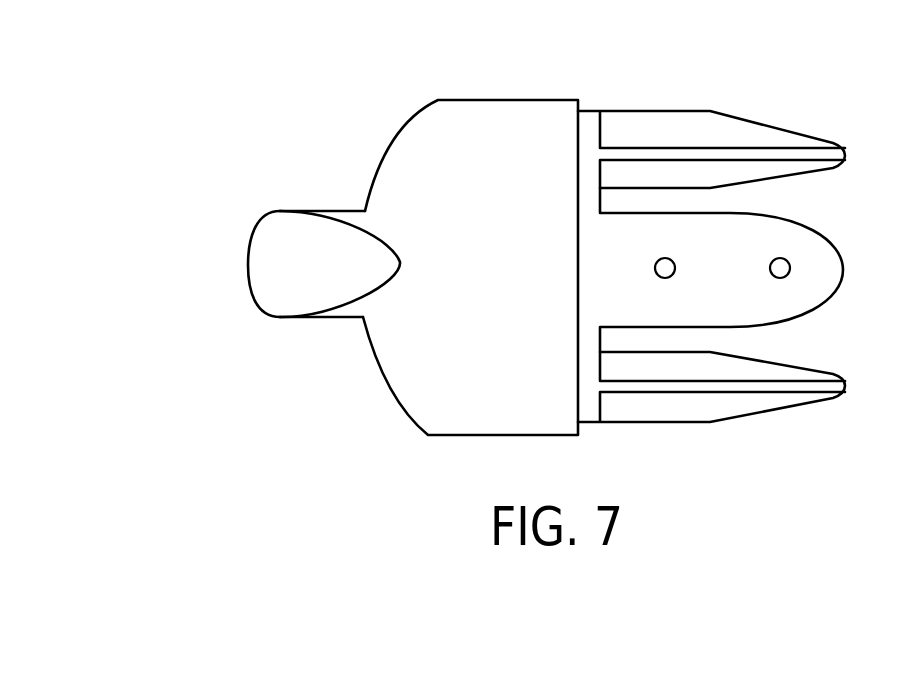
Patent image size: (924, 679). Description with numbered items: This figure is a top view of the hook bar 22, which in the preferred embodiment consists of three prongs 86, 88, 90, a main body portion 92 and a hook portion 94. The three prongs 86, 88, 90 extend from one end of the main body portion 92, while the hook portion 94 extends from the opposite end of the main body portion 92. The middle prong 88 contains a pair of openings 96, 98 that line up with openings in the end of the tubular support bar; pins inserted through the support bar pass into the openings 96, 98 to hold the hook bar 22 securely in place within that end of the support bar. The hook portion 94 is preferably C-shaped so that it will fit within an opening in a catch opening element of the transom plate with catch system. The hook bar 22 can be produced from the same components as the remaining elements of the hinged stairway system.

The hook bar 22 is at (706, 65).
The prong 86 is at (778, 143).
The middle prong 88 is at (803, 245).
The prong 90 is at (790, 402).
The main body portion 92 is at (520, 118).
The hook portion 94 is at (312, 253).
The opening 96 is at (780, 278).
The opening 98 is at (665, 278).